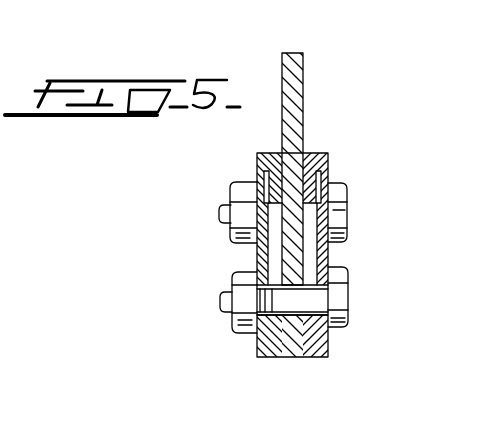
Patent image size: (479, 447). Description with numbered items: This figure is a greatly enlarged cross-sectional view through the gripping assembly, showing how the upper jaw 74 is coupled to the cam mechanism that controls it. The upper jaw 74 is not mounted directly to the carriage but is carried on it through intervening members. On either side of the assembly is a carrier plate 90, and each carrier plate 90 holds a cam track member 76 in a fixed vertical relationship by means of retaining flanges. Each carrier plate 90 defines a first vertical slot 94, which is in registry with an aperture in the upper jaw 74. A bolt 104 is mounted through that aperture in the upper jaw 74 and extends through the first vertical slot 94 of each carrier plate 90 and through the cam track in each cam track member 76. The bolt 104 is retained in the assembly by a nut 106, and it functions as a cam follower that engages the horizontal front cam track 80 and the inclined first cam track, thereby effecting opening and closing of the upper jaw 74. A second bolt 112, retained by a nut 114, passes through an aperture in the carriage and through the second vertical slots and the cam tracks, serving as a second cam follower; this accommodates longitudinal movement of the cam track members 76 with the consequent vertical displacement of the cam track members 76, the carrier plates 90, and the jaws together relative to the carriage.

The upper jaw 74 is at (297, 100).
The cam track member 76 is at (256, 256).
The first vertical slot 94 is at (242, 212).
The nut 114 is at (240, 190).
The bolt 112 is at (338, 214).
The bolt 104 is at (340, 288).
The front cam track 80 is at (250, 312).
The nut 106 is at (247, 320).
The carrier plate 90 is at (256, 345).